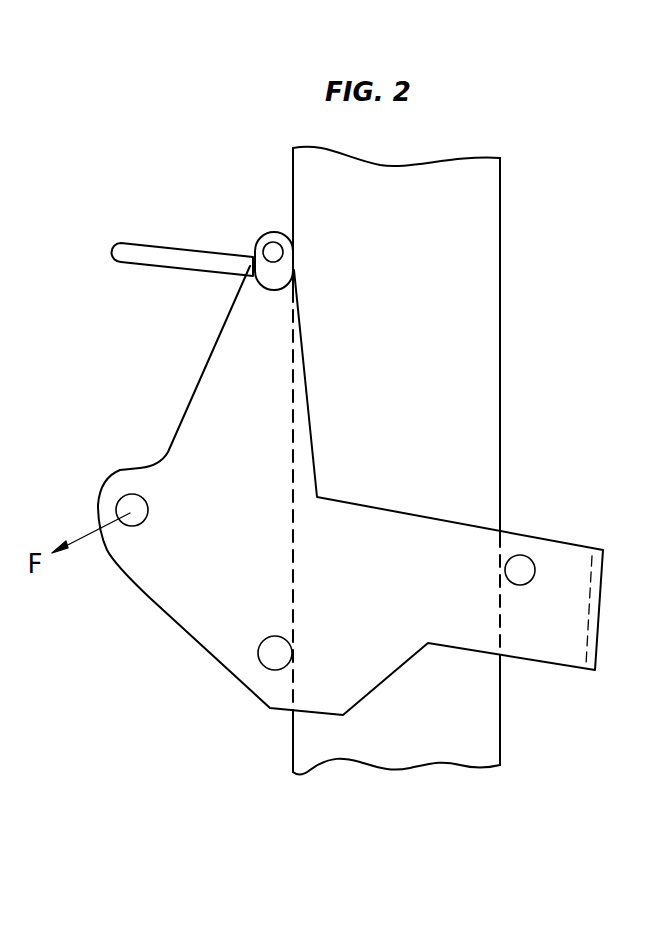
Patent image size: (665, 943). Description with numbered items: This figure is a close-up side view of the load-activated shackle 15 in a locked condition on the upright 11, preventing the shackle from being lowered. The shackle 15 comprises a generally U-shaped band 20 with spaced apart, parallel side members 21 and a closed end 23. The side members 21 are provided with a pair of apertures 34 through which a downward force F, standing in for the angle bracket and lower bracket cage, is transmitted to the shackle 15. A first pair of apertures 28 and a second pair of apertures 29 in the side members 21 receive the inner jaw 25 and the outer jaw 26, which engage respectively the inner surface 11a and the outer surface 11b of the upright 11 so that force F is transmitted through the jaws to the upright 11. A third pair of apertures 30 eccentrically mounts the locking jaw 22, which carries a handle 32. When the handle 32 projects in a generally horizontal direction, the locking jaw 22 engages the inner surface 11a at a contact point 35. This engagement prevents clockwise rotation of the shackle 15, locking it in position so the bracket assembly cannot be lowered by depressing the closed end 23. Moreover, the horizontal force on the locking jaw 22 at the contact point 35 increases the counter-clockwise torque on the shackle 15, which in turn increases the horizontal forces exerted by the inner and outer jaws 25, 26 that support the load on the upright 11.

The upright 11 is at (380, 461).
The inner surface 11a is at (293, 192).
The outer surface 11b is at (500, 338).
The load-activated shackle 15 is at (170, 170).
The U-shaped band 20 is at (542, 667).
The side members 21 is at (369, 503).
The locking jaw 22 is at (268, 287).
The closed end 23 is at (605, 590).
The inner jaw 25 is at (275, 658).
The outer jaw 26 is at (578, 560).
The first pair of apertures 28 is at (258, 652).
The second pair of apertures 29 is at (538, 575).
The third pair of apertures 30 is at (272, 270).
The handle 32 is at (165, 247).
The pair of apertures 34 is at (132, 505).
The contact point 35 is at (293, 250).